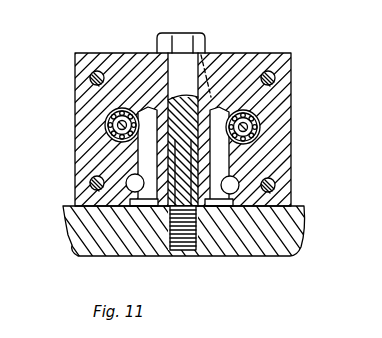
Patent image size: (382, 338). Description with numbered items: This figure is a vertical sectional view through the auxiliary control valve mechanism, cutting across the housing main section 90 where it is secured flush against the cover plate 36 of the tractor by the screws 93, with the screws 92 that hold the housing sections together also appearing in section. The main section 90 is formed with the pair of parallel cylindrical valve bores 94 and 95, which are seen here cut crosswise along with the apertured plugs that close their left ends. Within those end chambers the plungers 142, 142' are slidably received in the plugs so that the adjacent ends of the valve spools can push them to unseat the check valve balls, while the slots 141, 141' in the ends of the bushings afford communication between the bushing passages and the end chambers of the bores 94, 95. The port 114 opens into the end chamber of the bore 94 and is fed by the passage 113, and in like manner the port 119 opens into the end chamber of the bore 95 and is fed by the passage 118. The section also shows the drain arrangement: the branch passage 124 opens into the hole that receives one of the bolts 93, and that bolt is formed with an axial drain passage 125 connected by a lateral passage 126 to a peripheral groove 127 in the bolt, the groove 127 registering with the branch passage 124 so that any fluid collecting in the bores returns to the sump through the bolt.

The main section 90 is at (116, 68).
The cover plate 36 is at (287, 238).
The screws 93 is at (203, 42).
The peripheral groove 127 is at (152, 108).
The branch passage 124 is at (232, 53).
The axial drain passage 125 is at (152, 128).
The lateral passage 126 is at (212, 150).
The screws 92 is at (92, 73).
The valve bore 94 is at (114, 118).
The valve bore 95 is at (272, 118).
The plunger 142 is at (80, 120).
The slot 141 is at (84, 130).
The plunger 142' is at (293, 126).
The slot 141' is at (288, 133).
The port 114 is at (138, 148).
The port 119 is at (240, 158).
The passage 113 is at (100, 196).
The passage 118 is at (236, 194).